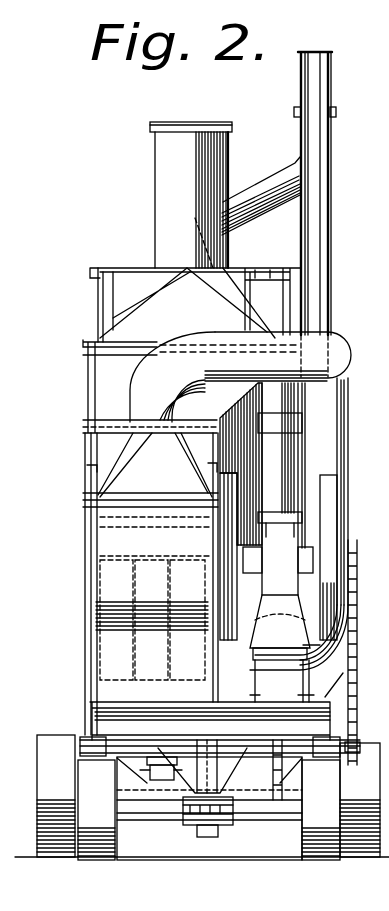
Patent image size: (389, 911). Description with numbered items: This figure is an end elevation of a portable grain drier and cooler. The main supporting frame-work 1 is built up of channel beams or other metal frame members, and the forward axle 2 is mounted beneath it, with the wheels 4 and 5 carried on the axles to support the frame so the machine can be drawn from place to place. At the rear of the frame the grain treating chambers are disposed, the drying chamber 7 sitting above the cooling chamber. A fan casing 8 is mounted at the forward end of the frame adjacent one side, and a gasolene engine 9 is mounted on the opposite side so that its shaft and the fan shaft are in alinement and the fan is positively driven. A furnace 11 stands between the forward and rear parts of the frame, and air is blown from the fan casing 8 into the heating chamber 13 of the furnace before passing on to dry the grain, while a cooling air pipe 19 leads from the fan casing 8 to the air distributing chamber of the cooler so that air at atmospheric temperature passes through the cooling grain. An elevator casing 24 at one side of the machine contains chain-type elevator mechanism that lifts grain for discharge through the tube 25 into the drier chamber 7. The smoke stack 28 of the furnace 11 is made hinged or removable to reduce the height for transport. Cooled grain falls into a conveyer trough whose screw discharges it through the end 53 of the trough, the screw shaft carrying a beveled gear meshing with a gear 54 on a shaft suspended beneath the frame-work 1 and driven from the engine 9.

The main supporting frame-work 1 is at (100, 717).
The forward axle 2 is at (255, 813).
The wheels 4 is at (102, 843).
The wheels 5 is at (55, 847).
The drying chamber 7 is at (107, 304).
The fan casing 8 is at (100, 610).
The gasolene engine 9 is at (313, 553).
The furnace 11 is at (152, 307).
The heating chamber 13 is at (112, 383).
The cooling air pipe 19 is at (342, 390).
The elevator casing 24 is at (320, 226).
The tube 25 is at (264, 188).
The smoke stack 28 is at (170, 183).
The end of trough 53 is at (168, 780).
The gear 54 is at (158, 780).